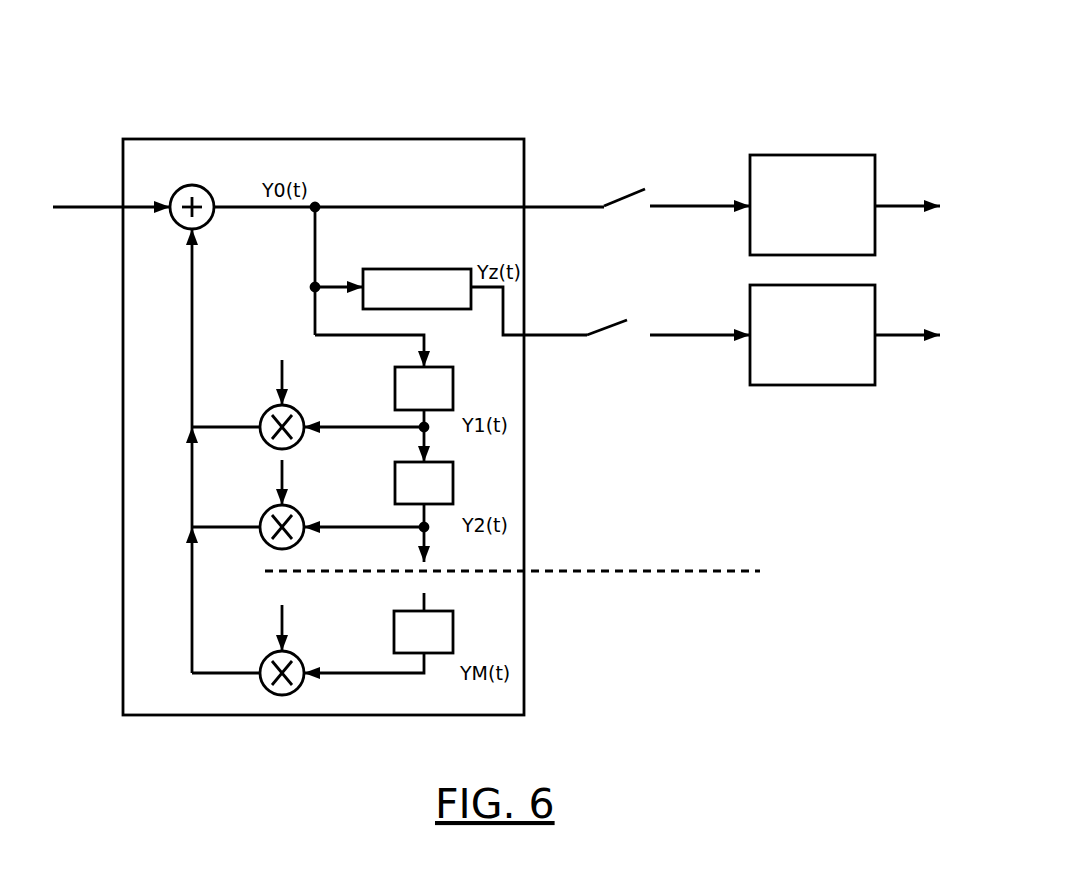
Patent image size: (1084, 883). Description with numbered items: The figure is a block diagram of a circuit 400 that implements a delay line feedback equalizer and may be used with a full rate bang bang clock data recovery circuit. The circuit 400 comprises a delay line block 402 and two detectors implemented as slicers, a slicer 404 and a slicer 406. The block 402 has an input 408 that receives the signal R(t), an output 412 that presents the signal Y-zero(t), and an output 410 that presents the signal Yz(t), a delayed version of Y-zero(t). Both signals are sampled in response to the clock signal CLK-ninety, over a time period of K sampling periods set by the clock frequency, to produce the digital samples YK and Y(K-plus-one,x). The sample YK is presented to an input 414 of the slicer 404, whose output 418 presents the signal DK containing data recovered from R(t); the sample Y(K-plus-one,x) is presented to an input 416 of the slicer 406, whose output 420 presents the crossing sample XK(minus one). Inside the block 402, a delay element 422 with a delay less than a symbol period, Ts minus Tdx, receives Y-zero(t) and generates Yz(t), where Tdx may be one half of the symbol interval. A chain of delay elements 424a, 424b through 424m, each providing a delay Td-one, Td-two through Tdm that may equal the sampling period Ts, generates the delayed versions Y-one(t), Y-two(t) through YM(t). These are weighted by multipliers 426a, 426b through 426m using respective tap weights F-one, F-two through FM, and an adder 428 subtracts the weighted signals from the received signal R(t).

The circuit 400 is at (448, 47).
The delay line block 402 is at (188, 139).
The slicer 404 is at (820, 386).
The slicer 406 is at (820, 155).
The input 408 is at (122, 208).
The output 410 is at (524, 336).
The output 412 is at (524, 207).
The input 414 is at (748, 340).
The input 416 is at (748, 210).
The output 418 is at (878, 340).
The output 420 is at (878, 210).
The delay element 422 is at (402, 268).
The delay element 424a is at (410, 367).
The delay element 424b is at (410, 462).
The delay element 424m is at (412, 611).
The multiplier 426a is at (275, 406).
The multiplier 426b is at (275, 506).
The multiplier 426m is at (275, 652).
The adder 428 is at (196, 184).